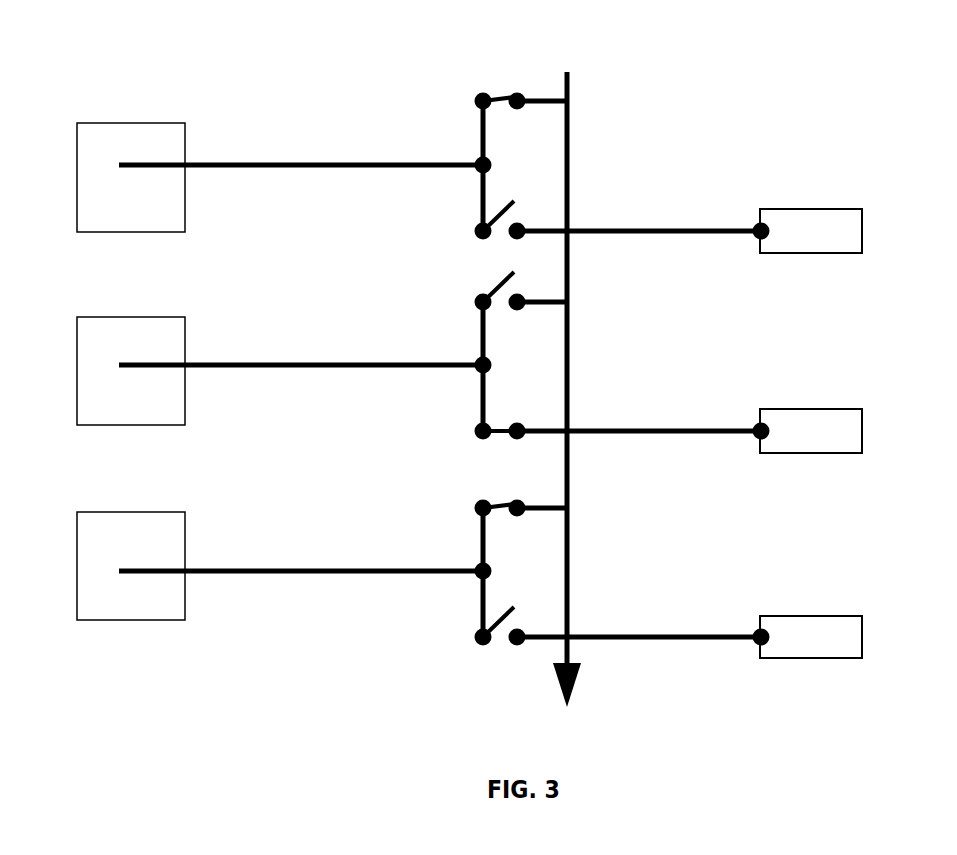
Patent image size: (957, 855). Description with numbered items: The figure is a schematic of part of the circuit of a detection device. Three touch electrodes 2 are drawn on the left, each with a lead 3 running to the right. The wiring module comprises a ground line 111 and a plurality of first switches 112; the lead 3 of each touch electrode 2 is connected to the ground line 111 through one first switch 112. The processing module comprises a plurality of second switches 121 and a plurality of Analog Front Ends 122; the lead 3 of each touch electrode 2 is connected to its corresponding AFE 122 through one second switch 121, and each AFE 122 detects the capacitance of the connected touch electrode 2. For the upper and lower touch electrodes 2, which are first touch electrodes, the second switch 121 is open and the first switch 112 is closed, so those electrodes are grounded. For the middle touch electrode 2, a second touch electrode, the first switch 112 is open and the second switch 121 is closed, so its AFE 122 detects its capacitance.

The touch electrode 2 is at (185, 123).
The lead 3 is at (321, 163).
The ground line 111 is at (567, 78).
The first switch 112 is at (500, 88).
The second switch 121 is at (488, 247).
The Analog Front End (AFE) 122 is at (862, 220).